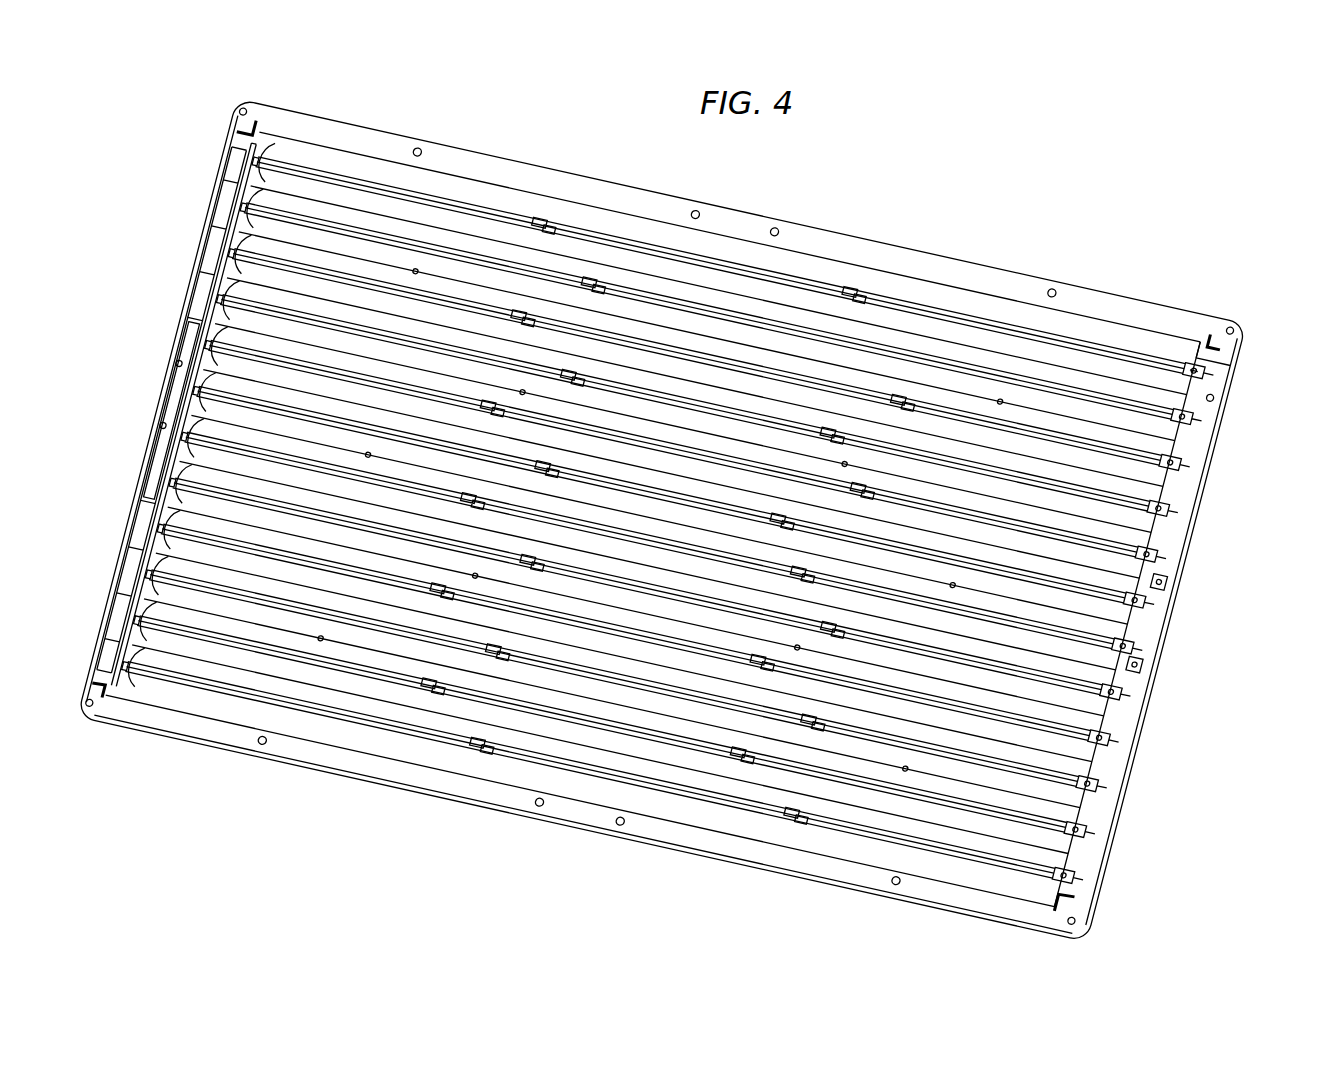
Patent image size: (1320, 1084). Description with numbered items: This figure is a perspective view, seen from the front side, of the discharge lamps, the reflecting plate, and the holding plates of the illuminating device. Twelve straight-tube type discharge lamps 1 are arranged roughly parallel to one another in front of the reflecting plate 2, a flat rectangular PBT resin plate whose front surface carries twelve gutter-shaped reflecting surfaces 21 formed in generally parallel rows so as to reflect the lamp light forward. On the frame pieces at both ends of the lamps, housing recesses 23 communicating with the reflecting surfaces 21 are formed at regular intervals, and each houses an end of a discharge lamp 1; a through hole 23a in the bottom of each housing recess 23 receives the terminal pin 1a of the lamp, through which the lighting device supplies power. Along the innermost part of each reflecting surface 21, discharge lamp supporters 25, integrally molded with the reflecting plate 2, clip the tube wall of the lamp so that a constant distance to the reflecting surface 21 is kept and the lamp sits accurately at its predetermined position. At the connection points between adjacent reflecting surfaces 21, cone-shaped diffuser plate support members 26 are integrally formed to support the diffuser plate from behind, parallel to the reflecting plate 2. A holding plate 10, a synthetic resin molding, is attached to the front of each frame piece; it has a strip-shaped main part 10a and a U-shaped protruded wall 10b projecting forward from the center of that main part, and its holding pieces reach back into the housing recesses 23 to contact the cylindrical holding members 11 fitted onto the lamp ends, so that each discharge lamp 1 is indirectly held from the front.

The discharge lamp 1 is at (1012, 325).
The terminal pin 1a is at (1226, 375).
The reflecting plate 2 is at (961, 260).
The holding plate 10 is at (232, 148).
The main part 10a is at (258, 152).
The protruded wall 10b is at (186, 325).
The holding member 11 is at (1213, 348).
The reflecting surface 21 is at (1110, 328).
The housing recess 23 is at (1226, 368).
The through hole 23a is at (1228, 384).
The discharge lamp supporter 25 is at (538, 220).
The diffuser plate support member 26 is at (418, 270).